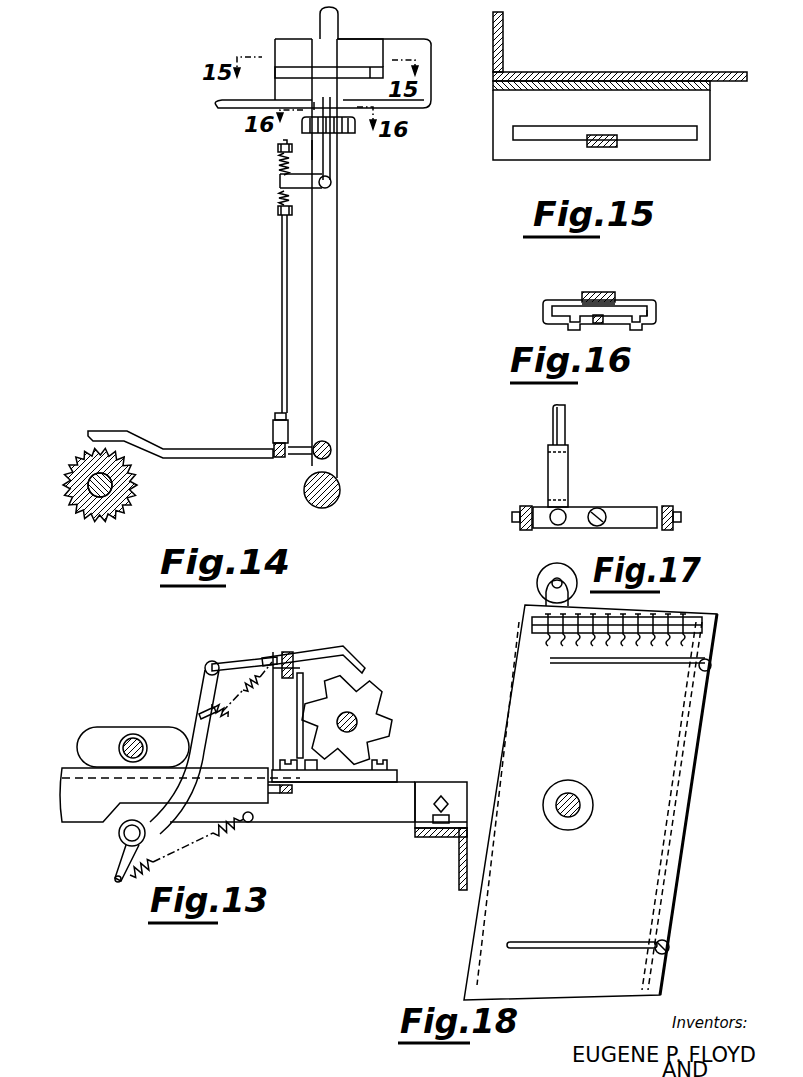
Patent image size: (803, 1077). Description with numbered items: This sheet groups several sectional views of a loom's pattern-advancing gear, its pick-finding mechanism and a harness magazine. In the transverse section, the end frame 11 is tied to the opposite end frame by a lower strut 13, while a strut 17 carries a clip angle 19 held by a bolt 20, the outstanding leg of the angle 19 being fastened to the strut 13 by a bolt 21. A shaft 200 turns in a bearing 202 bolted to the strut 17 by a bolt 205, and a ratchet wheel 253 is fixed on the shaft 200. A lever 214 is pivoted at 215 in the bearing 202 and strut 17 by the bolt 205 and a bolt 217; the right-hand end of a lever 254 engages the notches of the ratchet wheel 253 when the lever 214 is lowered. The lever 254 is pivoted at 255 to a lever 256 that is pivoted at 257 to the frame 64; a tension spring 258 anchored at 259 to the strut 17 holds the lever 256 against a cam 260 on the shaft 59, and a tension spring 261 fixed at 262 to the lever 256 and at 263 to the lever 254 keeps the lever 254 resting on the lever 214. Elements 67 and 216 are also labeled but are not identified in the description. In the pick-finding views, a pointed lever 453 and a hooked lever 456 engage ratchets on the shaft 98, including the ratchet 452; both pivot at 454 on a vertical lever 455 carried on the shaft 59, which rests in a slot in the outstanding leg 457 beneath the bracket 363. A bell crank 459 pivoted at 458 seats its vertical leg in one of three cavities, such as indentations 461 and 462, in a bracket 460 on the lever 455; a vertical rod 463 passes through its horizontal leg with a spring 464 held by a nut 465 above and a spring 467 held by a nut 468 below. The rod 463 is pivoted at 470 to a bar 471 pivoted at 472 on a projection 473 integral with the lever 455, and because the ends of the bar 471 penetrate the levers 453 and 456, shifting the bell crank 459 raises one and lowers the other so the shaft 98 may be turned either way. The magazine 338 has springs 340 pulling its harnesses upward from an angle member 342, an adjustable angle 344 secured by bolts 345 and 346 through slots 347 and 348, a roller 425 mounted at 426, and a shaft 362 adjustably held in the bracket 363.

In FIG. 14, the end frame 11 is at (403, 44).
In FIG. 15, the end frame 11 is at (505, 56).
In FIG. 13, the strut 13 is at (458, 861).
In FIG. 13, the strut 17 is at (342, 824).
In FIG. 13, the clip angle 19 is at (452, 810).
In FIG. 13, the bolt 20 is at (442, 794).
In FIG. 13, the bolt 21 is at (432, 818).
In FIG. 14, the shaft 59 is at (341, 485).
In FIG. 13, the shaft 59 is at (133, 734).
In FIG. 13, the frame 64 is at (62, 789).
In FIG. 13, the pin 67 is at (268, 789).
In FIG. 14, the shaft 98 is at (96, 486).
In FIG. 13, the shaft 200 is at (358, 710).
In FIG. 13, the bearing 202 is at (358, 782).
In FIG. 13, the bolt 205 is at (386, 759).
In FIG. 13, the lever 214 is at (287, 651).
In FIG. 13, the pivot 215 is at (238, 694).
In FIG. 13, the post 216 is at (273, 743).
In FIG. 13, the bolt 217 is at (296, 750).
In FIG. 13, the ratchet wheel 253 is at (378, 695).
In FIG. 13, the lever 254 is at (306, 656).
In FIG. 13, the pivot 255 is at (212, 660).
In FIG. 13, the lever 256 is at (205, 684).
In FIG. 13, the pivot 257 is at (119, 836).
In FIG. 13, the tension spring 258 is at (214, 840).
In FIG. 13, the spring anchor 259 is at (252, 823).
In FIG. 13, the cam 260 is at (85, 733).
In FIG. 13, the tension spring 261 is at (228, 717).
In FIG. 13, the spring anchor 262 is at (199, 716).
In FIG. 13, the spring anchor 263 is at (277, 658).
In FIG. 18, the harness magazine 338 is at (512, 705).
In FIG. 18, the springs 340 is at (542, 640).
In FIG. 18, the angle member 342 is at (532, 626).
In FIG. 18, the adjustable angle 344 is at (690, 828).
In FIG. 18, the bolt 345 is at (712, 665).
In FIG. 18, the bolt 346 is at (670, 947).
In FIG. 18, the slot 347 is at (634, 667).
In FIG. 18, the slot 348 is at (605, 944).
In FIG. 18, the shaft 362 is at (580, 797).
In FIG. 14, the bracket 363 is at (350, 44).
In FIG. 15, the bracket 363 is at (664, 80).
In FIG. 18, the roller 425 is at (540, 579).
In FIG. 18, the roller mounting 426 is at (573, 567).
In FIG. 14, the ratchet wheel 452 is at (136, 501).
In FIG. 17, the pointed lever 453 is at (670, 506).
In FIG. 14, the pivot 454 is at (332, 448).
In FIG. 14, the lever 455 is at (336, 344).
In FIG. 15, the lever 455 is at (604, 134).
In FIG. 16, the lever 455 is at (596, 292).
In FIG. 14, the hooked lever 456 is at (187, 442).
In FIG. 15, the hooked lever 456 is at (690, 136).
In FIG. 17, the hooked lever 456 is at (528, 506).
In FIG. 14, the outstanding leg 457 is at (285, 67).
In FIG. 15, the outstanding leg 457 is at (703, 160).
In FIG. 14, the pivot 458 is at (332, 185).
In FIG. 14, the bell crank 459 is at (337, 170).
In FIG. 16, the bell crank 459 is at (598, 325).
In FIG. 14, the bracket 460 is at (349, 134).
In FIG. 16, the bracket 460 is at (620, 310).
In FIG. 14, the indentation 461 is at (338, 114).
In FIG. 16, the indentation 461 is at (648, 312).
In FIG. 14, the indentation 462 is at (317, 111).
In FIG. 16, the indentation 462 is at (553, 312).
In FIG. 14, the vertical rod 463 is at (281, 284).
In FIG. 17, the vertical rod 463 is at (566, 411).
In FIG. 14, the spring 464 is at (278, 163).
In FIG. 14, the nut 465 is at (277, 149).
In FIG. 14, the spring 467 is at (278, 197).
In FIG. 14, the nut 468 is at (278, 212).
In FIG. 17, the pivot 470 is at (567, 513).
In FIG. 14, the bar 471 is at (274, 462).
In FIG. 17, the bar 471 is at (641, 505).
In FIG. 14, the pivot 472 is at (272, 446).
In FIG. 17, the pivot 472 is at (596, 529).
In FIG. 14, the projection 473 is at (290, 460).